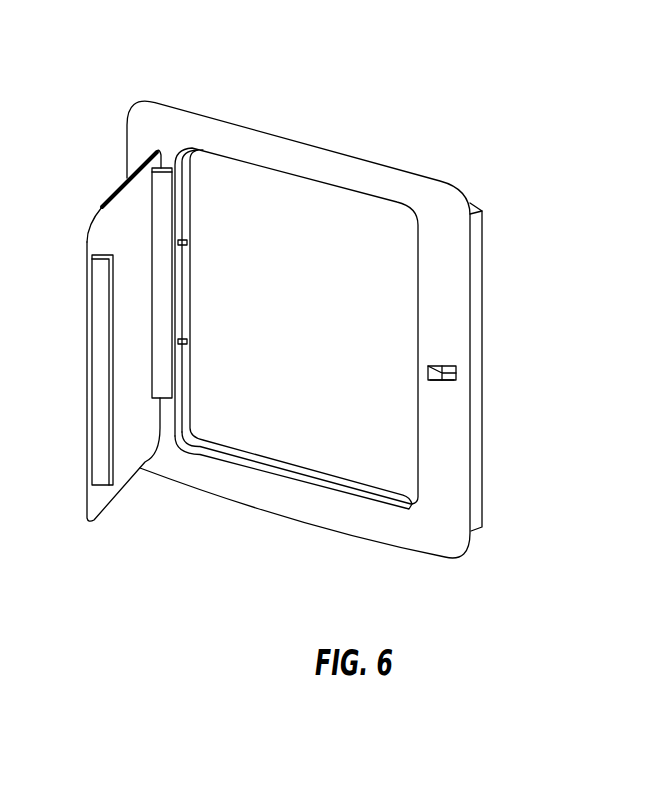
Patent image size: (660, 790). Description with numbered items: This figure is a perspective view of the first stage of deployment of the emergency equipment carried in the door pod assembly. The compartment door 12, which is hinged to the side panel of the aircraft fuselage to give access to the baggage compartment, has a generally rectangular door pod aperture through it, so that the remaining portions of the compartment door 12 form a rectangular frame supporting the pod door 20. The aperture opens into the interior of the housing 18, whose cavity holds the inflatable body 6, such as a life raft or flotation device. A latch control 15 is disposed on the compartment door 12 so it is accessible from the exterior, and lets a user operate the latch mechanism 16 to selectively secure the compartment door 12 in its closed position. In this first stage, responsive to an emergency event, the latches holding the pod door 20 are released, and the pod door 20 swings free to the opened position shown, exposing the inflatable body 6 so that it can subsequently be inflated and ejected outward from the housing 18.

The compartment door 12 is at (261, 148).
The inflatable body 6 is at (332, 207).
The pod door 20 is at (110, 202).
The housing 18 is at (457, 277).
The latch mechanism 16 is at (445, 362).
The latch control 15 is at (442, 380).